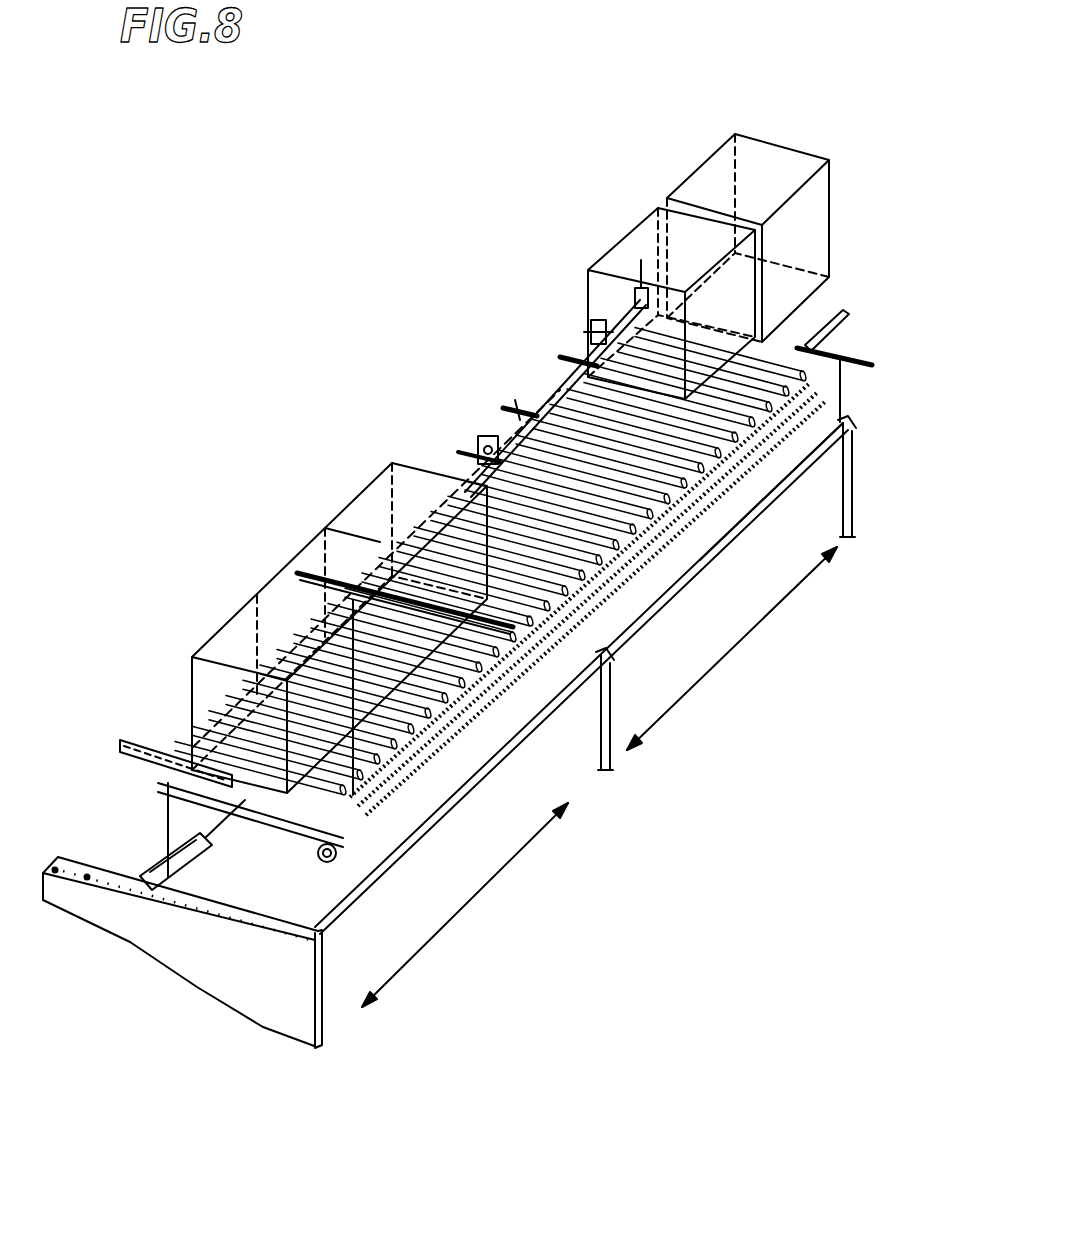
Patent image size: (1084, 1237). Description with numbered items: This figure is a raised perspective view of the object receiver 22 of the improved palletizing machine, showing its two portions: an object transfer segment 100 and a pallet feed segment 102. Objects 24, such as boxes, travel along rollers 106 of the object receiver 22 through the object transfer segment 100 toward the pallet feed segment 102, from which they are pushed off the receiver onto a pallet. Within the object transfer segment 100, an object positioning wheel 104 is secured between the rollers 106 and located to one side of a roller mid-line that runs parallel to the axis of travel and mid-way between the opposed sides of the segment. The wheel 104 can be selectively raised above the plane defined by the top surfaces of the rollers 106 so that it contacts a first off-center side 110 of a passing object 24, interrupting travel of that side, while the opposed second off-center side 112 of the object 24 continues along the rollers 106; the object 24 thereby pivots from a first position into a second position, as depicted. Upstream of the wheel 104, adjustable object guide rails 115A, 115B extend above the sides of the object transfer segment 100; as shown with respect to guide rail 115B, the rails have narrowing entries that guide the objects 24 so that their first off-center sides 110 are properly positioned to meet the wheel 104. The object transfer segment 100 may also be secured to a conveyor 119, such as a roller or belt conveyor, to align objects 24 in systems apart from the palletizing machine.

The object receiver 22 is at (236, 544).
The objects 24 is at (773, 173).
The object transfer segment 100 is at (680, 555).
The pallet feed segment 102 is at (452, 778).
The object positioning wheel 104 is at (476, 451).
The rollers 106 is at (807, 338).
The first off-center side 110 is at (598, 330).
The second off-center side 112 is at (641, 300).
The adjustable object guide rail 115A is at (553, 408).
The adjustable object guide rail 115B is at (837, 323).
The conveyor 119 is at (825, 407).